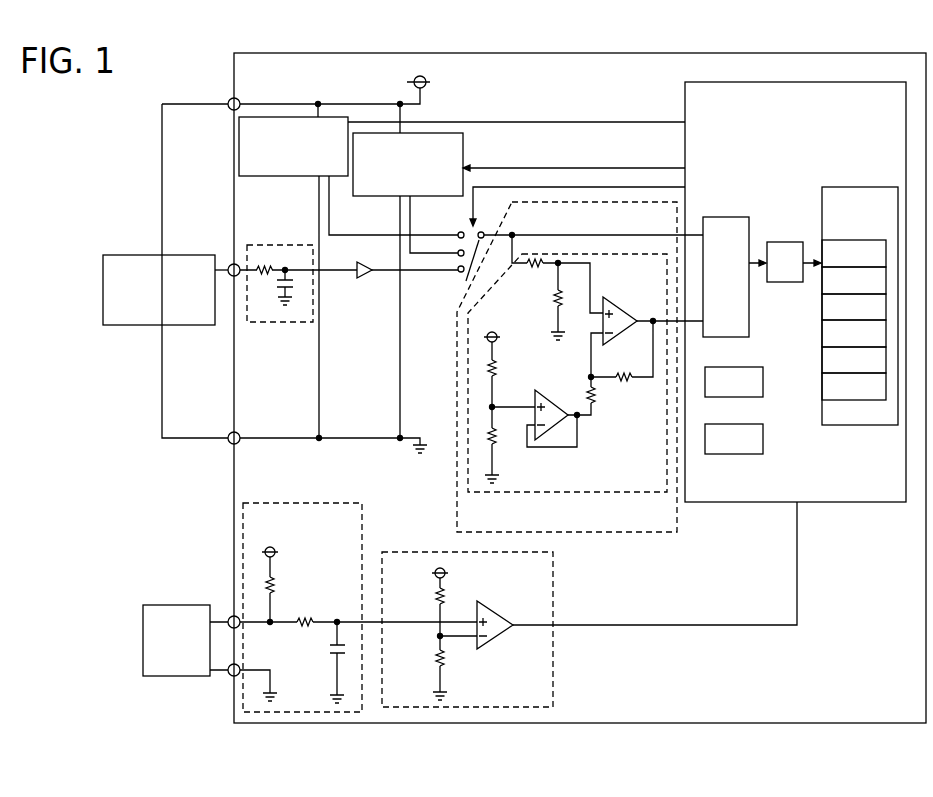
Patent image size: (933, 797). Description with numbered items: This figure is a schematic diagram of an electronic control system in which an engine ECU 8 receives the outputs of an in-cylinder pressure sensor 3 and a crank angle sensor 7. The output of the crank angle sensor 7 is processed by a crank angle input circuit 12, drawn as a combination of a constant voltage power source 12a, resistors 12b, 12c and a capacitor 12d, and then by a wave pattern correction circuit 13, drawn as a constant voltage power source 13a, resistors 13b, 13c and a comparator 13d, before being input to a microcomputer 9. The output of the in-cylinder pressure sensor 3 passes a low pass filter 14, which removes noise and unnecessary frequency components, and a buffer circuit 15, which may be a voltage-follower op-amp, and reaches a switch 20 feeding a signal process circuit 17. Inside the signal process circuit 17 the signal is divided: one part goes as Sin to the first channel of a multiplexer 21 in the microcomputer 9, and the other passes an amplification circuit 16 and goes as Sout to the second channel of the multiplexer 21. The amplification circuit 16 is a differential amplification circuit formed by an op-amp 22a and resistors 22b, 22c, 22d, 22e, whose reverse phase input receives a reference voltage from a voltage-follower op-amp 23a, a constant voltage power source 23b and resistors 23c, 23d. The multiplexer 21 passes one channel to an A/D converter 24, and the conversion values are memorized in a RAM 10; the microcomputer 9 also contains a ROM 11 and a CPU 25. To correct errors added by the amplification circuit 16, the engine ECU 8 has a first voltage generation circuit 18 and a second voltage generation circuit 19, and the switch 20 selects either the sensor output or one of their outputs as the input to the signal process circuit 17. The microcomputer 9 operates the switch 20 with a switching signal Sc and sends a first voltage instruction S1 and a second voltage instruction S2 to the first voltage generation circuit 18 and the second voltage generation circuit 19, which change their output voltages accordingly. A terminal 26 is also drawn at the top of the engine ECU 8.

The in-cylinder pressure sensor 3 is at (178, 256).
The crank angle sensor 7 is at (168, 605).
The engine ECU 8 is at (365, 53).
The microcomputer 9 is at (745, 84).
The RAM 10 is at (838, 187).
The ROM 11 is at (748, 367).
The crank angle input circuit 12 is at (265, 503).
The constant voltage power source 12a is at (275, 550).
The resistor 12b is at (278, 586).
The resistor 12c is at (312, 618).
The capacitor 12d is at (325, 652).
The wave pattern correction circuit 13 is at (553, 697).
The constant voltage power source 13a is at (448, 573).
The resistor 13b is at (432, 602).
The resistor 13c is at (432, 668).
The comparator 13d is at (500, 616).
The low pass filter 14 is at (290, 323).
The buffer circuit 15 is at (362, 280).
The amplification circuit 16 is at (661, 492).
The signal process circuit 17 is at (645, 532).
The first voltage generation circuit 18 is at (463, 149).
The second voltage generation circuit 19 is at (275, 177).
The switch 20 is at (462, 283).
The multiplexer 21 is at (715, 217).
The op-amp 22a is at (630, 337).
The resistor 22b is at (625, 382).
The resistor 22c is at (594, 400).
The resistor 22d is at (562, 300).
The resistor 22e is at (527, 268).
The op-amp 23a is at (552, 400).
The constant voltage power source 23b is at (499, 336).
The resistor 23c is at (497, 370).
The resistor 23d is at (497, 440).
The A/D converter 24 is at (784, 242).
The CPU 25 is at (748, 424).
The power supply terminal 26 is at (430, 81).
The first voltage instruction S1 is at (518, 168).
The second voltage instruction S2 is at (535, 122).
The switching signal Sc is at (470, 214).
The signal input to the first channel Sin is at (583, 233).
The signal input to the second channel Sout is at (652, 318).